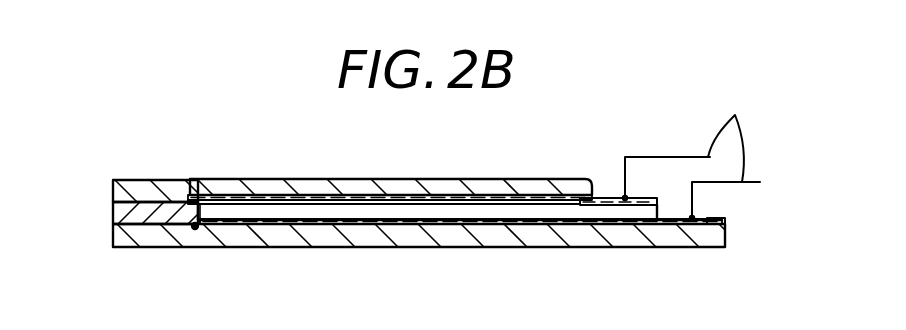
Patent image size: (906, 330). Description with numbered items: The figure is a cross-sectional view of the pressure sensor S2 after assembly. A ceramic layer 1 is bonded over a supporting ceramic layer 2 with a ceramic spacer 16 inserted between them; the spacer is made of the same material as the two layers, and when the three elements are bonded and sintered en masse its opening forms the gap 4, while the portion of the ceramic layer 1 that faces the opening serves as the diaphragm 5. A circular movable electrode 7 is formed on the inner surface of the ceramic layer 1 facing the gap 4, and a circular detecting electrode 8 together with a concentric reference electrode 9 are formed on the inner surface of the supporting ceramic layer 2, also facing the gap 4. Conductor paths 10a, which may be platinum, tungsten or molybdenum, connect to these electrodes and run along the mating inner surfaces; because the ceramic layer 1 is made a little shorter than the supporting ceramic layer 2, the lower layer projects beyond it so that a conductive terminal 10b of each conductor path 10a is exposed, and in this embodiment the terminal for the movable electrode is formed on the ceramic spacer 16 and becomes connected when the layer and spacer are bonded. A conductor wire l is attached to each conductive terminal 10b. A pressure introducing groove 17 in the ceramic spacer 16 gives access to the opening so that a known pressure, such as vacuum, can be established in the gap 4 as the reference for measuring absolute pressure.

The ceramic layer 1 is at (152, 188).
The supporting ceramic layer 2 is at (160, 240).
The gap 4 is at (255, 214).
The diaphragm 5 is at (265, 190).
The movable electrode 7 is at (218, 195).
The detecting electrode 8 is at (228, 228).
The reference electrode 9 is at (195, 229).
The conductor path 10a is at (392, 196).
The conductive terminal 10b is at (606, 198).
The ceramic spacer 16 is at (113, 215).
The pressure introducing groove 17 is at (425, 212).
The pressure sensor S2 is at (540, 153).
The conductor wire l is at (692, 151).